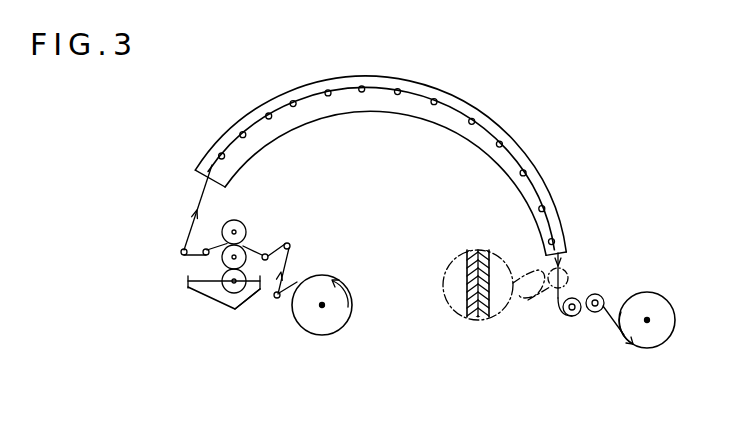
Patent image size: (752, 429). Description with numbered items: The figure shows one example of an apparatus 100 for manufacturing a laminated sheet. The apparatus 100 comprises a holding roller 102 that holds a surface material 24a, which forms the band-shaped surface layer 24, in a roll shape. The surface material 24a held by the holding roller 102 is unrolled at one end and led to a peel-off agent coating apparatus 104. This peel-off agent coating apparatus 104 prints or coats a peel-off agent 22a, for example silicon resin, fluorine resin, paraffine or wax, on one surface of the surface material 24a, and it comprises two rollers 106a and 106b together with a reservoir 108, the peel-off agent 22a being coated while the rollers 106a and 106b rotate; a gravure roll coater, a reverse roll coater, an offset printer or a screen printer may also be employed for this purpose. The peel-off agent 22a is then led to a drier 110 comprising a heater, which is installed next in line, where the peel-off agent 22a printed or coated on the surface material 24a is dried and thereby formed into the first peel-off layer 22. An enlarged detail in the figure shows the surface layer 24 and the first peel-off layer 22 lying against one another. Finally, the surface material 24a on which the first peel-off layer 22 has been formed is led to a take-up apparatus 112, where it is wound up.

The apparatus 100 is at (459, 35).
The drier 110 is at (447, 98).
The roller 106b is at (247, 245).
The roller 106a is at (232, 284).
The peel-off agent 22a is at (193, 291).
The peel-off agent coating apparatus 104 is at (235, 320).
The reservoir 108 is at (252, 300).
The surface material 24a is at (287, 252).
The holding roller 102 is at (333, 323).
The surface layer 24 is at (473, 318).
The first peel-off layer 22 is at (485, 318).
The take-up apparatus 112 is at (641, 305).